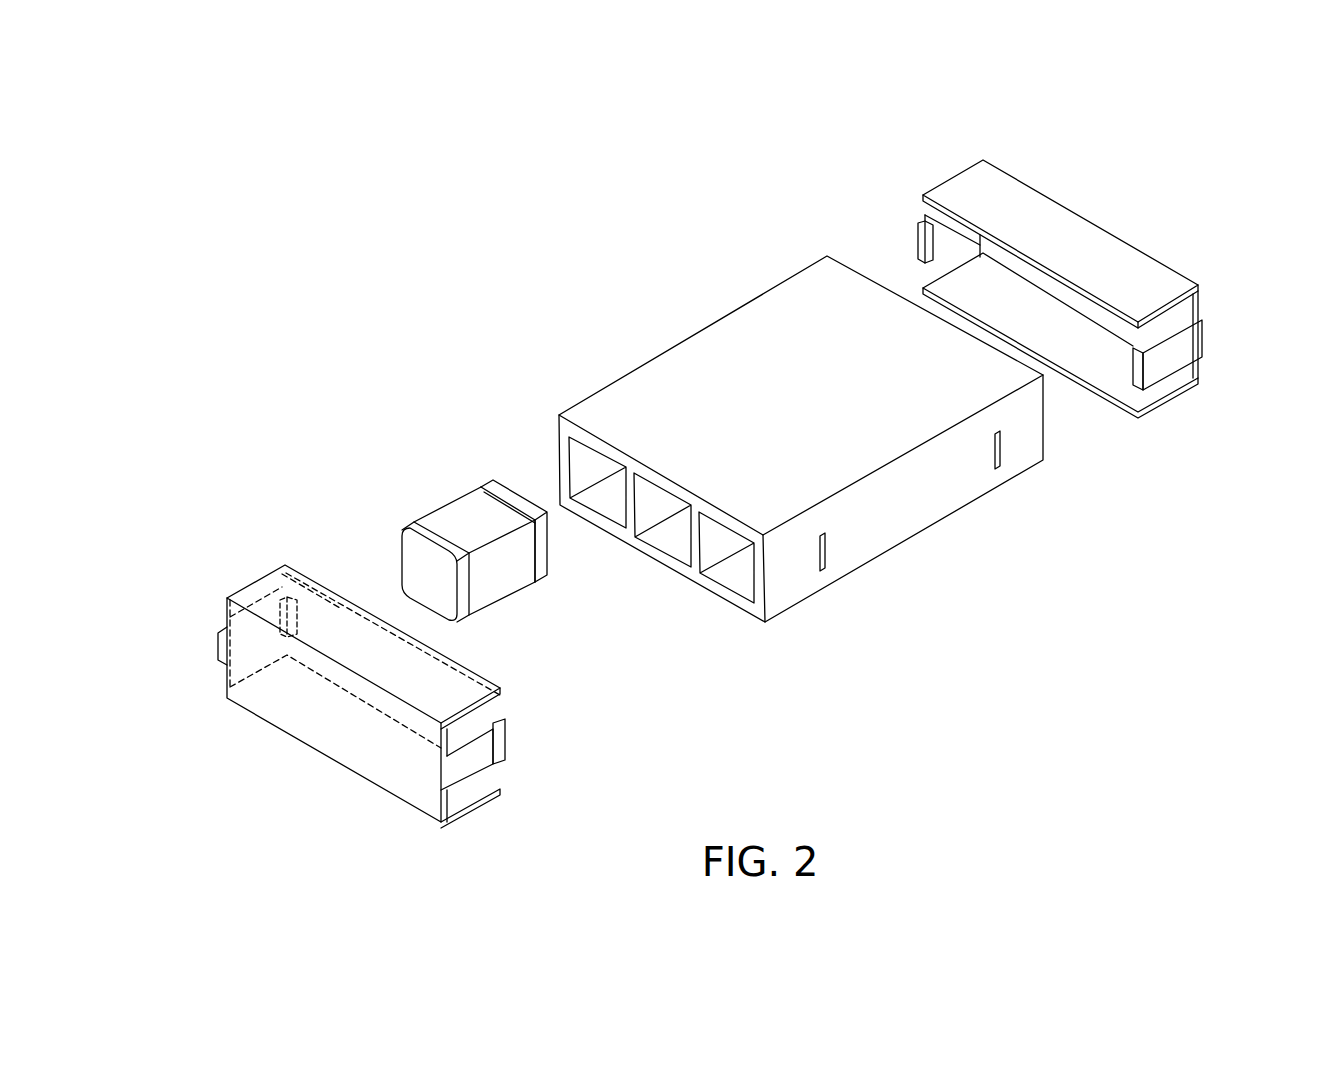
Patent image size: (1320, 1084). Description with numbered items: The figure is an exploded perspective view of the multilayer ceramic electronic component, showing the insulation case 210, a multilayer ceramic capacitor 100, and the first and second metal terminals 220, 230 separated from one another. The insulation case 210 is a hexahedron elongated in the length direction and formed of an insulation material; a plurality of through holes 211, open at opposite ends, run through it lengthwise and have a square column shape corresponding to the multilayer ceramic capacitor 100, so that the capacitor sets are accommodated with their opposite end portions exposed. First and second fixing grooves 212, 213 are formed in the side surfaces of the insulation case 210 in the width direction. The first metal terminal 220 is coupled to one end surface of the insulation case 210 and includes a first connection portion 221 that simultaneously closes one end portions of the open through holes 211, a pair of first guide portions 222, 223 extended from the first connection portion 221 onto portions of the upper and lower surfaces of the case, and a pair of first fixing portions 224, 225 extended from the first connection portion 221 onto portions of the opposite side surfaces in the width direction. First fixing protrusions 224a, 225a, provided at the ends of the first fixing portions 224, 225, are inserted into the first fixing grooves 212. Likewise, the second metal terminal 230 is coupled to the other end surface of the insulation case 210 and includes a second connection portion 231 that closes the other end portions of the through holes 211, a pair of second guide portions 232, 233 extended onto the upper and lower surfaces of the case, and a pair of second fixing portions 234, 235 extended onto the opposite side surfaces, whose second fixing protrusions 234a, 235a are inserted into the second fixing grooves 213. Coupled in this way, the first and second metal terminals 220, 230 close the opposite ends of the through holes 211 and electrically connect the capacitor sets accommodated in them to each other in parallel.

The multilayer ceramic capacitor 100 is at (452, 504).
The insulation case 210 is at (763, 439).
The through holes 211 is at (588, 461).
The first fixing grooves 212 is at (830, 557).
The second fixing grooves 213 is at (1003, 455).
The first metal terminal 220 is at (378, 689).
The first connection portion 221 is at (240, 663).
The first guide portion 222 is at (247, 597).
The first guide portion 223 is at (463, 808).
The first fixing portion 224 is at (320, 572).
The first fixing protrusion 224a is at (283, 590).
The first fixing portion 225 is at (526, 760).
The first fixing protrusion 225a is at (493, 720).
The second metal terminal 230 is at (1048, 286).
The second connection portion 231 is at (1195, 303).
The second guide portion 232 is at (963, 183).
The second guide portion 233 is at (1185, 392).
The second fixing portion 234 is at (894, 202).
The second fixing protrusion 234a is at (937, 253).
The second fixing portion 235 is at (1191, 390).
The second fixing protrusion 235a is at (1133, 357).